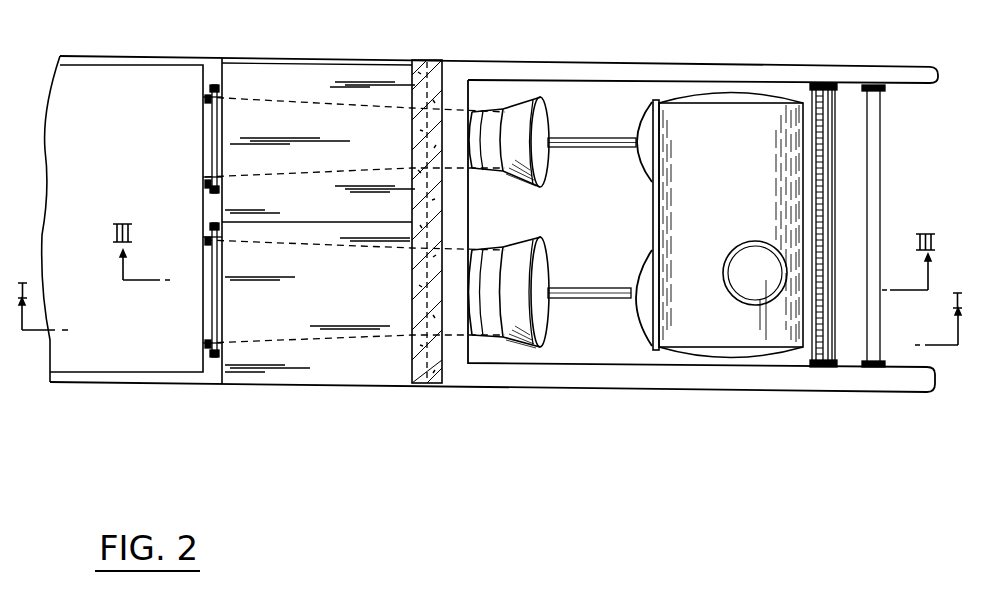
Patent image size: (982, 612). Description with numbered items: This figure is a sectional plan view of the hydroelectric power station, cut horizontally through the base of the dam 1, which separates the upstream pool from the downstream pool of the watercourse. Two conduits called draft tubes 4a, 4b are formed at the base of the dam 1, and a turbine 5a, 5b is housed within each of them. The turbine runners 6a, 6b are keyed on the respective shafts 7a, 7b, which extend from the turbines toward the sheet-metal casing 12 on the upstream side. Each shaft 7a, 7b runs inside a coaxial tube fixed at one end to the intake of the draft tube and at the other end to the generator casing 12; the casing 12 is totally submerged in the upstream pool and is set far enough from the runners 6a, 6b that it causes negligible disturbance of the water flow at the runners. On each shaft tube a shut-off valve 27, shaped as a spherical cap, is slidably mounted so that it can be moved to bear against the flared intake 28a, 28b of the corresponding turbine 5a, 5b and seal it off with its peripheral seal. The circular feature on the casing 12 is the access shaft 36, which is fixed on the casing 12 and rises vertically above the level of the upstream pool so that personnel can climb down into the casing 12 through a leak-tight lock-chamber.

The dam 1 is at (456, 213).
The draft tube 4a is at (325, 318).
The draft tube 4b is at (278, 113).
The turbine 5a is at (512, 345).
The turbine 5b is at (505, 182).
The turbine runner 6a is at (493, 254).
The turbine runner 6b is at (493, 122).
The shaft 7a is at (580, 296).
The shaft 7b is at (583, 145).
The sheet-metal casing 12 is at (762, 101).
The shut-off valve 27 is at (643, 106).
The flared intake 28a is at (543, 258).
The flared intake 28b is at (544, 116).
The access shaft 36 is at (743, 244).